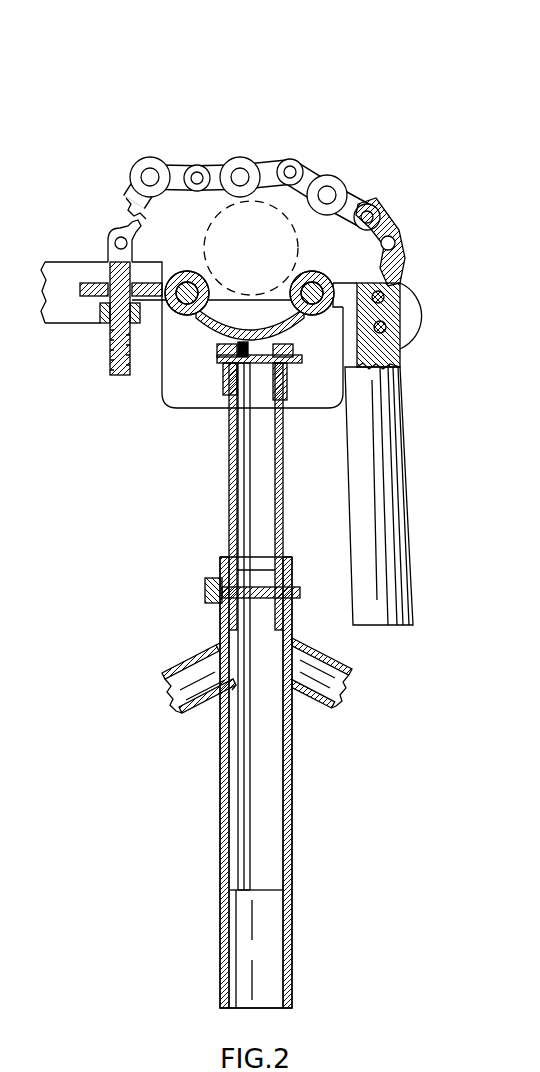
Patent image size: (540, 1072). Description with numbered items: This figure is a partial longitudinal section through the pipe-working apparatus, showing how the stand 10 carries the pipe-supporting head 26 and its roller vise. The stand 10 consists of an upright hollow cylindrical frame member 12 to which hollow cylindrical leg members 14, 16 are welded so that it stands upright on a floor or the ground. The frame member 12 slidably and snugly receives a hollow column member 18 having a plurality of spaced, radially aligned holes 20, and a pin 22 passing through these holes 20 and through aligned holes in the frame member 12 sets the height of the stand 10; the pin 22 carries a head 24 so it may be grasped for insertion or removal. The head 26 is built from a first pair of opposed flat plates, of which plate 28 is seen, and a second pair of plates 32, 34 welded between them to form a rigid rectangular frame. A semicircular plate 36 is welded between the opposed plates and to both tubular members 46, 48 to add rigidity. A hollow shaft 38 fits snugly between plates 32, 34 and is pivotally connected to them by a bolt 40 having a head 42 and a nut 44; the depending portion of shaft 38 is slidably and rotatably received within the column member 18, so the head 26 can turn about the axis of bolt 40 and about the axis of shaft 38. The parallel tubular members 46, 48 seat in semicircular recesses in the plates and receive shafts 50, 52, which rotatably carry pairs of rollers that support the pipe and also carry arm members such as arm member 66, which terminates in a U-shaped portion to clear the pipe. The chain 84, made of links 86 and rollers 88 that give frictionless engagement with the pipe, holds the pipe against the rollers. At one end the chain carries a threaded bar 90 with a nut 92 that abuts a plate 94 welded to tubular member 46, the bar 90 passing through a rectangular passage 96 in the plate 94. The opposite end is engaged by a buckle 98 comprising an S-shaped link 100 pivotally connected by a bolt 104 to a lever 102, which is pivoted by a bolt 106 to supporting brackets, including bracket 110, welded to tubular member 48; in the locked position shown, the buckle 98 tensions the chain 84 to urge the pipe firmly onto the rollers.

The stand 10 is at (260, 782).
The frame member 12 is at (290, 915).
The leg member 14 is at (346, 661).
The leg member 16 is at (170, 662).
The column member 18 is at (283, 818).
The holes 20 is at (290, 708).
The pin 22 is at (300, 594).
The head 24 is at (205, 590).
The pipe-supporting head 26 is at (218, 377).
The plate 28 is at (152, 406).
The plate 32 is at (288, 386).
The plate 34 is at (220, 376).
The semicircular plate 36 is at (290, 330).
The shaft 38 is at (258, 484).
The bolt 40 is at (248, 368).
The head 42 is at (220, 352).
The nut 44 is at (290, 366).
The tubular member 46 is at (175, 270).
The tubular member 48 is at (312, 285).
The shaft 50 is at (172, 283).
The shaft 52 is at (305, 312).
The arm member 66 is at (62, 320).
The chain 84 is at (257, 152).
The links 86 is at (181, 166).
The rollers 88 is at (148, 167).
The threaded bar 90 is at (110, 257).
The nut 92 is at (100, 321).
The plate 94 is at (77, 290).
The passage 96 is at (151, 283).
The buckle 98 is at (397, 411).
The S-shaped link 100 is at (420, 300).
The lever 102 is at (388, 430).
The bolt 104 is at (399, 352).
The bolt 106 is at (390, 327).
The supporting bracket 110 is at (343, 288).